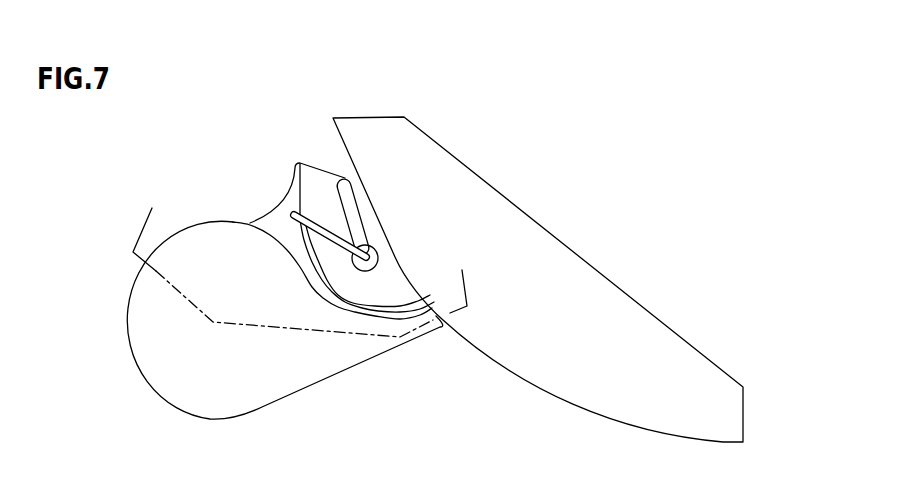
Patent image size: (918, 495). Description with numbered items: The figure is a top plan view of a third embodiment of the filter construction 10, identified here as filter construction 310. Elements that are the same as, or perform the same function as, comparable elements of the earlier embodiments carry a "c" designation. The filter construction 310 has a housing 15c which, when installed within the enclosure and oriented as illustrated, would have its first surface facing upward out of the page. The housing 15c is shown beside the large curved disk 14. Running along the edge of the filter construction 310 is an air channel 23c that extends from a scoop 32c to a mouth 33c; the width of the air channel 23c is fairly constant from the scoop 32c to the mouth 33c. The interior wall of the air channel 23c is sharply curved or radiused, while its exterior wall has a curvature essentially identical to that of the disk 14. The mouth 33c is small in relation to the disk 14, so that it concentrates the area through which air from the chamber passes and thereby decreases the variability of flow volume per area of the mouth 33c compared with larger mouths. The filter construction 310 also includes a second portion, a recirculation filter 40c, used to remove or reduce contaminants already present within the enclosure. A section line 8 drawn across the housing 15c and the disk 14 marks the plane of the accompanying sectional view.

The section line 8- 8 is at (305, 267).
The filter construction 10 is at (113, 275).
The filter construction 310 is at (115, 327).
The disk 14 is at (528, 383).
The housing 15c is at (148, 394).
The air channel 23c is at (316, 272).
The scoop 32c is at (302, 172).
The mouth 33c is at (391, 311).
The recirculation filter 40c is at (293, 216).